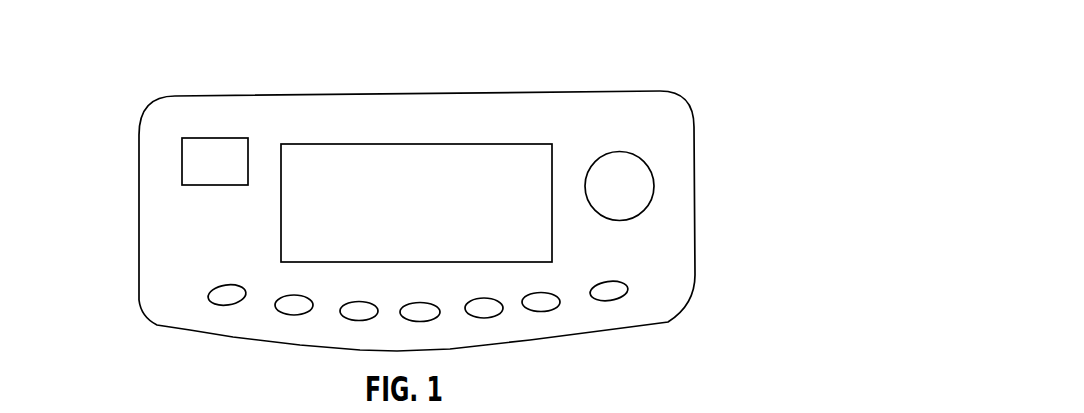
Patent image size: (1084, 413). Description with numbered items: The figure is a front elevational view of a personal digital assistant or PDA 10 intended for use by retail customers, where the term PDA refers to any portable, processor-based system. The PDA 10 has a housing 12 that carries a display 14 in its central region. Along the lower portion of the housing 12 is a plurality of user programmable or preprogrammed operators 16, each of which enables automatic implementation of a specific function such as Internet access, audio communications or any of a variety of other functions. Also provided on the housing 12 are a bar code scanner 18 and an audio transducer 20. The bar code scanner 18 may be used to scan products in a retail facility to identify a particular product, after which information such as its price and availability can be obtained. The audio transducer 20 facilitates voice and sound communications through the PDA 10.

The personal digital assistant 10 is at (682, 60).
The housing 12 is at (370, 212).
The display 14 is at (416, 156).
The user programmable operators 16 is at (339, 279).
The bar code scanner 18 is at (196, 167).
The audio transducer 20 is at (680, 161).